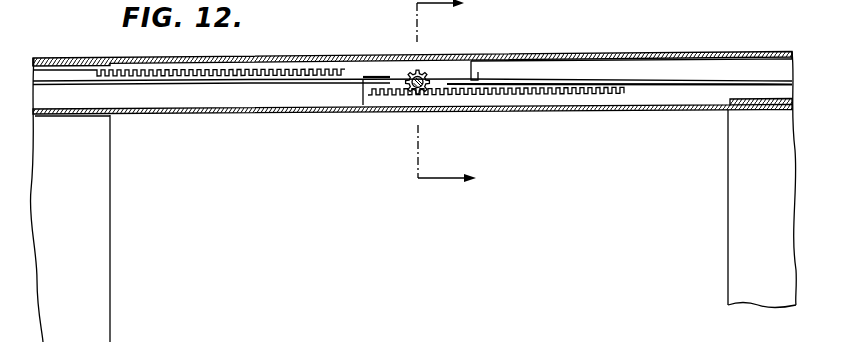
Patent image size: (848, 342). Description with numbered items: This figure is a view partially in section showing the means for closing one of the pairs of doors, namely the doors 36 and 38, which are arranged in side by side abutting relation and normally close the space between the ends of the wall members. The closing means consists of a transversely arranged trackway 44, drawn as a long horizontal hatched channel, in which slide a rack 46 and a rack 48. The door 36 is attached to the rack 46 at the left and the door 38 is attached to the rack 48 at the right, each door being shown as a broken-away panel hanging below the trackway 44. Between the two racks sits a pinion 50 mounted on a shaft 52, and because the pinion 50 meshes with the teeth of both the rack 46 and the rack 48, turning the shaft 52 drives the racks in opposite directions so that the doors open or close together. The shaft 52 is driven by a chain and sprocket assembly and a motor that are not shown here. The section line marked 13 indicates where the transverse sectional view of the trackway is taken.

The section line 13- 13 is at (446, 91).
The door 36 is at (110, 217).
The door 38 is at (736, 202).
The trackway 44 is at (522, 57).
The rack 46 is at (283, 56).
The rack 48 is at (604, 99).
The pinion 50 is at (408, 93).
The shaft 52 is at (425, 71).